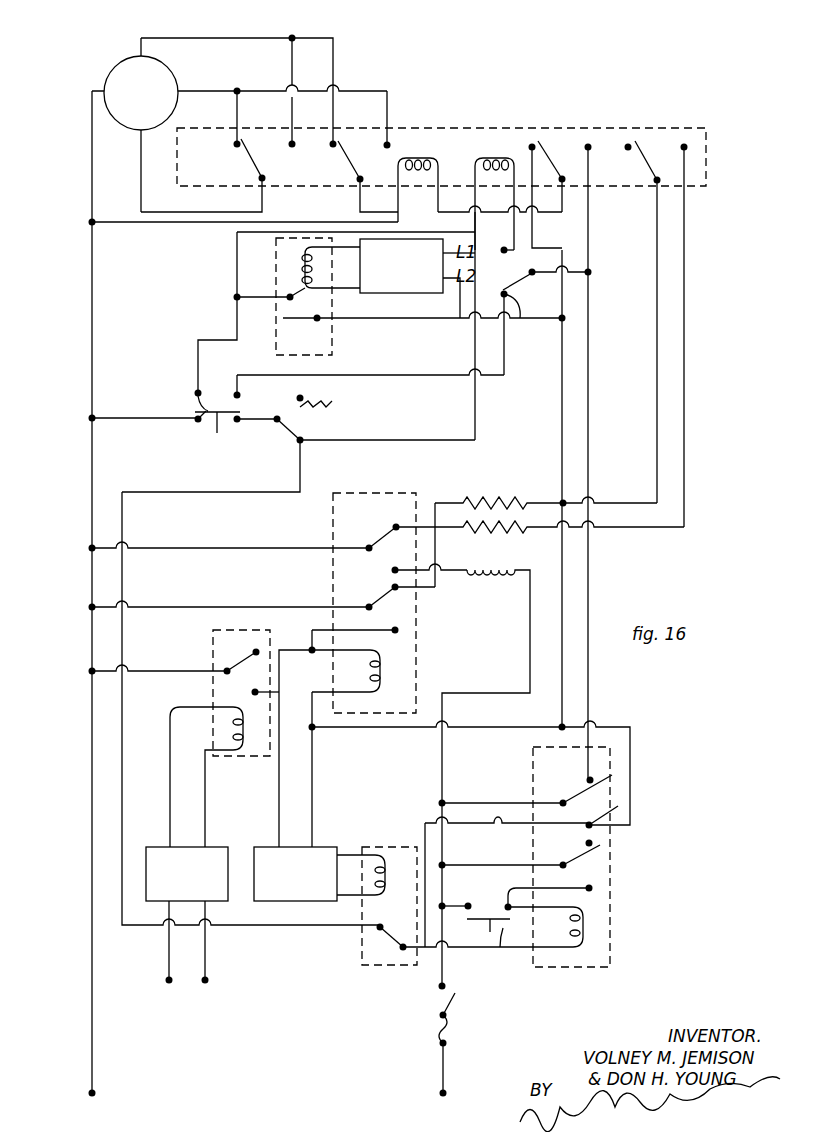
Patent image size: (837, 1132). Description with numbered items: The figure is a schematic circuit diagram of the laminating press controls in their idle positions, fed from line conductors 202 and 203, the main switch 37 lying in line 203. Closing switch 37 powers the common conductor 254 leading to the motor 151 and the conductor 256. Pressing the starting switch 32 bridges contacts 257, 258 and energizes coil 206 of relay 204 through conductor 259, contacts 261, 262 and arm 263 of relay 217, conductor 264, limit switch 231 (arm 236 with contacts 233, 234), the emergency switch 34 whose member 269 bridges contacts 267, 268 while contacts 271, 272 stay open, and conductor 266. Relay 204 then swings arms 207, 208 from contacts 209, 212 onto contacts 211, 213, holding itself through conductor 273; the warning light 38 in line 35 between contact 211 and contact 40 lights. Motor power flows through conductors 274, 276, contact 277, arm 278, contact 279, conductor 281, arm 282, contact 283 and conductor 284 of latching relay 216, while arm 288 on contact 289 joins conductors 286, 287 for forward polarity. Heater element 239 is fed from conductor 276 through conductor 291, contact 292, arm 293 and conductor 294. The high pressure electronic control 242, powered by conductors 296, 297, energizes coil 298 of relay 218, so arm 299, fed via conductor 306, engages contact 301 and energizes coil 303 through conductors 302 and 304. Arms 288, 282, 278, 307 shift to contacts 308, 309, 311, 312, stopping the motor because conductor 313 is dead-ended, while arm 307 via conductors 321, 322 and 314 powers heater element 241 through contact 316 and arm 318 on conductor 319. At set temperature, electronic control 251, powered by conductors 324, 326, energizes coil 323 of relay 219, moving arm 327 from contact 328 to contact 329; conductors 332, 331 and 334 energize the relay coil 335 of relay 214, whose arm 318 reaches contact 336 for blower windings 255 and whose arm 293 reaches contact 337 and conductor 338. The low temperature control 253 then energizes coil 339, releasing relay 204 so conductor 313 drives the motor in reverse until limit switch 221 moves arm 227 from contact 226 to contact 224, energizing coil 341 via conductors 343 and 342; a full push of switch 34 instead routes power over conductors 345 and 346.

The motor 151 is at (118, 72).
The conductor 284 is at (293, 37).
The conductor 287 is at (208, 90).
The contact 289 is at (235, 146).
The switch arm 288 is at (255, 165).
The conductor 286 is at (141, 172).
The contact 308 is at (292, 147).
The contact 283 is at (333, 147).
The switch arm 282 is at (377, 146).
The conductor 281 is at (358, 205).
The latching relay 216 is at (448, 128).
The relay coil 303 is at (430, 128).
The contact 309 is at (400, 158).
The relay coil 341 is at (488, 158).
The contact point 277 is at (532, 144).
The switch arm 278 is at (548, 145).
The contact 279 is at (570, 210).
The contact 311 is at (594, 130).
The switch arm 307 is at (650, 135).
The contact 312 is at (690, 145).
The conductor 314 is at (690, 412).
The conductor 321 is at (657, 318).
The conductor 343 is at (588, 270).
The conductor 304 is at (150, 224).
The conductor 302 is at (237, 235).
The contact 301 is at (280, 296).
The relay coil 298 is at (308, 288).
The electronic control for high pressure 242 is at (400, 293).
The conductor 296 is at (475, 235).
The conductor 297 is at (460, 284).
The contact 224 is at (503, 249).
The switch arm 227 is at (512, 285).
The limit switch 221 is at (512, 292).
The contact 226 is at (512, 318).
The switch arm 299 is at (317, 322).
The conductor 306 is at (410, 320).
The relay 218 is at (332, 345).
The conductor 345 is at (435, 375).
The contact 272 is at (195, 390).
The contact 271 is at (235, 392).
The contact 233 is at (298, 398).
The limit switch 231 is at (328, 404).
The movable stop switch member 269 is at (198, 410).
The emergency switch 34 is at (215, 430).
The conductor 266 is at (130, 420).
The contact 267 is at (195, 421).
The contact 268 is at (237, 422).
The switch arm 236 is at (285, 428).
The contact 234 is at (298, 443).
The common conductor 254 is at (92, 466).
The conductor 202 is at (92, 1045).
The conductor 342 is at (460, 438).
The conductor 276 is at (562, 408).
The conductor 313 is at (588, 400).
The relay 214 is at (400, 493).
The heater element 239 is at (505, 503).
The connection point 322 is at (568, 500).
The heater element 241 is at (510, 527).
The conductor 291 is at (437, 548).
The contact 316 is at (382, 528).
The contact arm 318 is at (376, 548).
The conductor 319 is at (222, 548).
The contact 336 is at (392, 570).
The blower motor windings 255 is at (510, 575).
The contact 292 is at (392, 587).
The switch arm 293 is at (408, 598).
The conductor 294 is at (230, 596).
The conductor 338 is at (392, 630).
The contact 337 is at (405, 630).
The contact 328 is at (275, 645).
The switch arm 327 is at (230, 668).
The relay 219 is at (258, 757).
The conductor 332 is at (167, 671).
The conductor 331 is at (281, 685).
The contact 329 is at (254, 690).
The relay coil 335 is at (388, 665).
The conductor 334 is at (316, 777).
The relay coil 323 is at (232, 735).
The conductor 264 is at (122, 792).
The electronic control 251 is at (146, 878).
The conductor 324 is at (169, 950).
The conductor 326 is at (205, 950).
The electronic low temperature control 253 is at (300, 905).
The relay coil 339 is at (382, 855).
The contact 261 is at (375, 923).
The switch arm 263 is at (395, 935).
The contact point 262 is at (403, 950).
The contact 40 is at (430, 950).
The relay 217 is at (362, 965).
The main switch 37 is at (448, 1008).
The conductor 203 is at (443, 1073).
The conductor 256 is at (442, 757).
The conductor 274 is at (650, 715).
The contact arm 207 is at (575, 782).
The contact 209 is at (612, 775).
The conductor 346 is at (490, 792).
The line 35 is at (440, 803).
The contact 211 is at (618, 806).
The warning light 38 is at (498, 826).
The contact 212 is at (600, 840).
The contact arm 208 is at (605, 860).
The conductor 273 is at (523, 865).
The contact 213 is at (600, 887).
The contact 258 is at (516, 908).
The relay coil 206 is at (583, 930).
The conductor 259 is at (527, 950).
The contact 257 is at (468, 903).
The starting switch 32 is at (499, 948).
The relay 204 is at (610, 967).